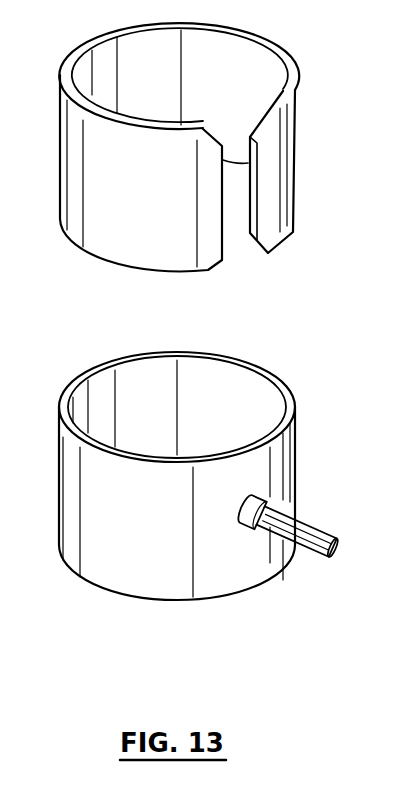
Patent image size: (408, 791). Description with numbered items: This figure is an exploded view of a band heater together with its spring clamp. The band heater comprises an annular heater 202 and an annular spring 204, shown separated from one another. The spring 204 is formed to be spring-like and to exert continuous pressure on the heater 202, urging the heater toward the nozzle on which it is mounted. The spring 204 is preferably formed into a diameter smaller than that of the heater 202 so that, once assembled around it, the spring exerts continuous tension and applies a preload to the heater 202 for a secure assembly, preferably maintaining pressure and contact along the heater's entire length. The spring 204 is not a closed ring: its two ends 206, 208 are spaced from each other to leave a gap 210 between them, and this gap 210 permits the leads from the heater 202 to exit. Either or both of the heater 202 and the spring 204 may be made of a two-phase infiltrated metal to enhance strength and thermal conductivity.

The annular heater 202 is at (304, 442).
The annular spring 204 is at (304, 168).
The end of spring 206 is at (279, 133).
The end of spring 208 is at (142, 200).
The gap 210 is at (228, 131).